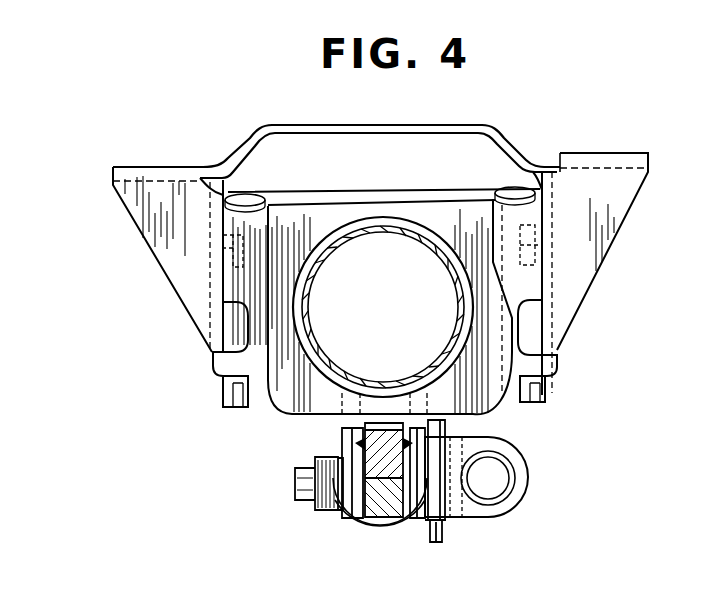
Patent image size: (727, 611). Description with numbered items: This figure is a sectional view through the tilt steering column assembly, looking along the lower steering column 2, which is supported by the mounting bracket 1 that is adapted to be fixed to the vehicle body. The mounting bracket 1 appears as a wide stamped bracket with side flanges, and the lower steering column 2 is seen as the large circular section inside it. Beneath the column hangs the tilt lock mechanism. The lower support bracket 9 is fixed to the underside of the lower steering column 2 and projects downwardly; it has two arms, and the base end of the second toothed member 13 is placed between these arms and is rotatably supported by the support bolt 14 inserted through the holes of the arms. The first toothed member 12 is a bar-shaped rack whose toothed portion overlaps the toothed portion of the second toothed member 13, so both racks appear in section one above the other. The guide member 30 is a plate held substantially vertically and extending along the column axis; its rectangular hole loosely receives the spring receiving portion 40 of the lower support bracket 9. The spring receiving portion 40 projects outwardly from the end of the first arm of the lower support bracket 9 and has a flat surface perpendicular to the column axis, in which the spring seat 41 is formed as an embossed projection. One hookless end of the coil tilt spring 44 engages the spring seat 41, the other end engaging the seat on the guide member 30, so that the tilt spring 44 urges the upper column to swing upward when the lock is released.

The mounting bracket 1 is at (510, 136).
The lower steering column 2 is at (368, 220).
The lower support bracket 9 is at (348, 427).
The first toothed member 12 is at (373, 432).
The second toothed member 13 is at (386, 508).
The support bolt 14 is at (296, 480).
The guide member 30 is at (436, 541).
The spring receiving portion 40 is at (506, 486).
The spring seat 41 is at (488, 478).
The tilt spring 44 is at (500, 443).